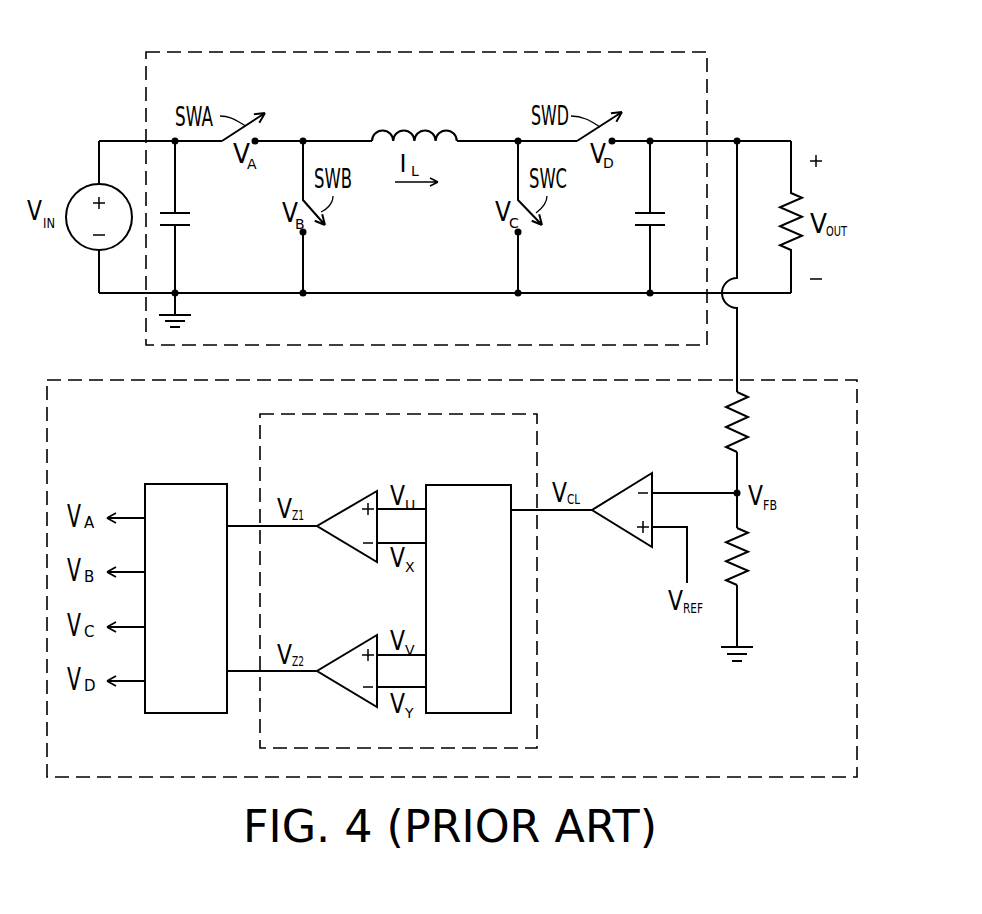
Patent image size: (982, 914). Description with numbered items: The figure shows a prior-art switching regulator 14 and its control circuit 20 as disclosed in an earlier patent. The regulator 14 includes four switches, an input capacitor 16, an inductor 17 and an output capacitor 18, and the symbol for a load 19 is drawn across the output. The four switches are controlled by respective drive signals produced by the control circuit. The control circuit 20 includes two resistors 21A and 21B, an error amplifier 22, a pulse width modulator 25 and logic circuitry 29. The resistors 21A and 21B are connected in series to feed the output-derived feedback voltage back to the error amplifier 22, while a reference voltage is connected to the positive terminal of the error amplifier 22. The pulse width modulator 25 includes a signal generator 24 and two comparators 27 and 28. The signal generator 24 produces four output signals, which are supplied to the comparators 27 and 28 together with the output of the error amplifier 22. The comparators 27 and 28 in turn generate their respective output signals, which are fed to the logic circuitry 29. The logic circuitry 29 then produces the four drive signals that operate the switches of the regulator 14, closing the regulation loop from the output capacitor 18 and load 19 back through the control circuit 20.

The switching regulator 14 is at (666, 50).
The input capacitor 16 is at (190, 218).
The inductor 17 is at (405, 130).
The output capacitor 18 is at (660, 218).
The load 19 is at (779, 242).
The control circuit 20 is at (792, 380).
The resistor 21A is at (745, 440).
The resistor 21B is at (745, 575).
The error amplifier 22 is at (622, 492).
The signal generator 24 is at (467, 485).
The pulse width modulator 25 is at (538, 661).
The comparator 27 is at (348, 506).
The comparator 28 is at (348, 652).
The logic circuitry 29 is at (186, 484).